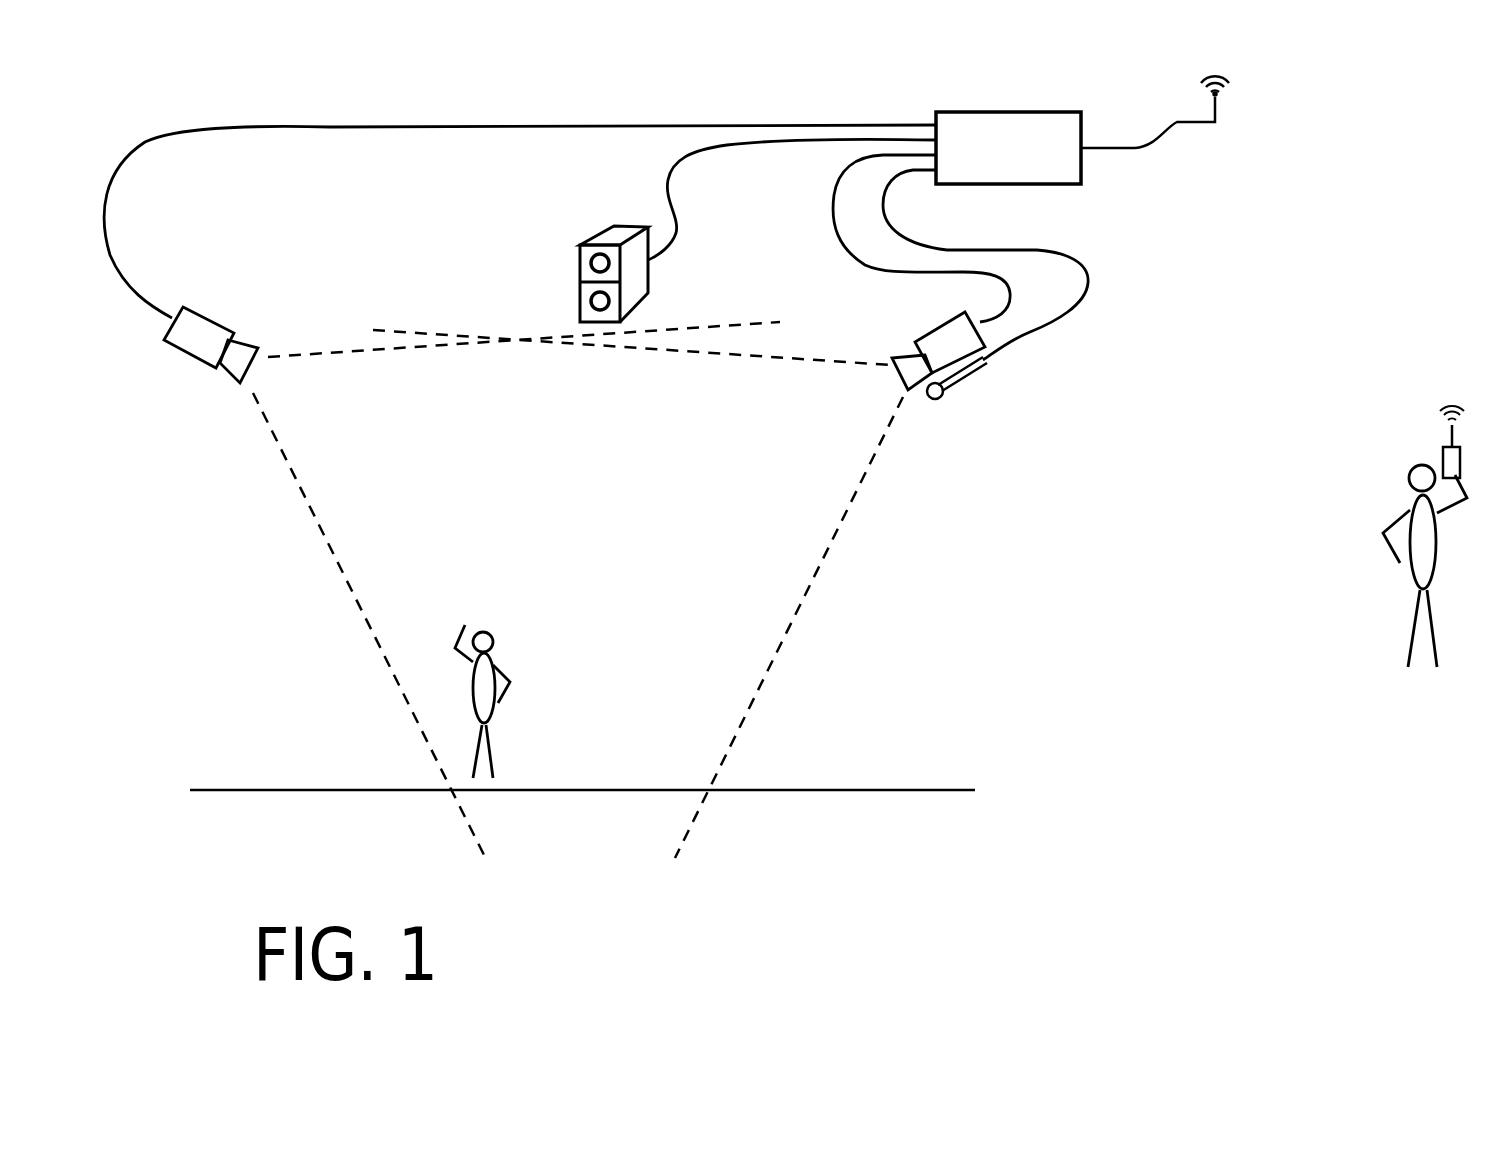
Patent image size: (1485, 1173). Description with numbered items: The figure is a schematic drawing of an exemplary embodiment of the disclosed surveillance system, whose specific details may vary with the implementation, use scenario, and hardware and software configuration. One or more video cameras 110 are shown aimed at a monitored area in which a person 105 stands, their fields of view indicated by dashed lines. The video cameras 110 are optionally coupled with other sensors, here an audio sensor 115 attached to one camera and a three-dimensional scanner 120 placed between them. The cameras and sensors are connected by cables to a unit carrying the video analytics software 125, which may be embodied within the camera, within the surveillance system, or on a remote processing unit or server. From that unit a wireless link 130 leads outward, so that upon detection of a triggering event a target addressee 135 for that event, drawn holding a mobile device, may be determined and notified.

The person in capture area 105 is at (520, 701).
The video cameras 110 is at (937, 318).
The audio sensor 115 is at (985, 377).
The 3D scanner 120 is at (572, 274).
The video analytics software 125 is at (1008, 148).
The wireless communication link 130 is at (1193, 113).
The target addressee 135 is at (1391, 536).